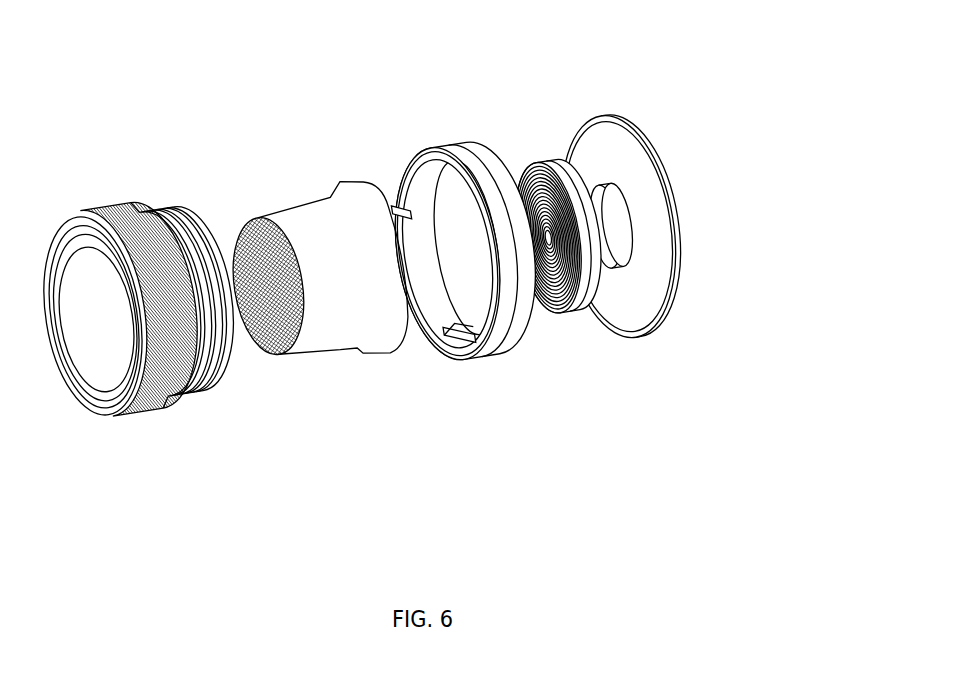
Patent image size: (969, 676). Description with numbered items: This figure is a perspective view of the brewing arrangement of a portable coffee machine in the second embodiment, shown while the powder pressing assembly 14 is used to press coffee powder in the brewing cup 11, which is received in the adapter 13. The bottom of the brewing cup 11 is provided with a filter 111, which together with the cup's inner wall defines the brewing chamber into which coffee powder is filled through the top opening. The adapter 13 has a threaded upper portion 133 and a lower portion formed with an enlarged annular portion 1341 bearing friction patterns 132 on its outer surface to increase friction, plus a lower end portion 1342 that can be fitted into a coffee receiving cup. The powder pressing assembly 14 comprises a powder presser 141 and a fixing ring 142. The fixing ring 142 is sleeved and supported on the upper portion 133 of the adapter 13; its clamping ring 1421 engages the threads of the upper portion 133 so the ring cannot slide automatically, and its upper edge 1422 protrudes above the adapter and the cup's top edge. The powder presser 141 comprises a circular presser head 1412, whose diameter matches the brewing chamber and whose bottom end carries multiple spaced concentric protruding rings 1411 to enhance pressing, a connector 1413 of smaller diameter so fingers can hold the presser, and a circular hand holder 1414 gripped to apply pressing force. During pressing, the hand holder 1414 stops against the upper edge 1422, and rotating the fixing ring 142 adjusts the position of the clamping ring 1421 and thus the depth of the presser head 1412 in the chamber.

The brewing cup 11 is at (323, 306).
The filter 111 is at (288, 238).
The adapter 13 is at (156, 307).
The friction patterns 132 is at (112, 200).
The upper portion 133 is at (183, 210).
The enlarged annular portion 1341 is at (146, 415).
The lower end portion 1342 is at (97, 400).
The powder pressing assembly 14 is at (585, 270).
The powder presser 141 is at (659, 225).
The concentric protruding rings 1411 is at (530, 165).
The presser head 1412 is at (580, 158).
The connector 1413 is at (640, 197).
The hand holder 1414 is at (660, 250).
The fixing ring 142 is at (498, 254).
The clamping ring 1421 is at (400, 200).
The upper edge 1422 is at (520, 345).